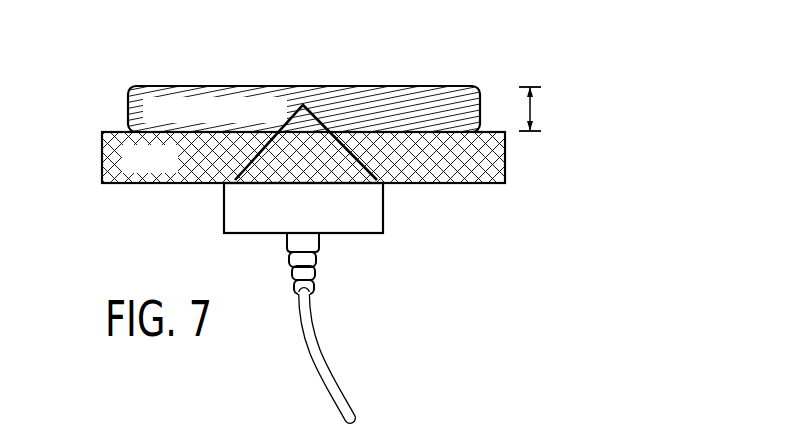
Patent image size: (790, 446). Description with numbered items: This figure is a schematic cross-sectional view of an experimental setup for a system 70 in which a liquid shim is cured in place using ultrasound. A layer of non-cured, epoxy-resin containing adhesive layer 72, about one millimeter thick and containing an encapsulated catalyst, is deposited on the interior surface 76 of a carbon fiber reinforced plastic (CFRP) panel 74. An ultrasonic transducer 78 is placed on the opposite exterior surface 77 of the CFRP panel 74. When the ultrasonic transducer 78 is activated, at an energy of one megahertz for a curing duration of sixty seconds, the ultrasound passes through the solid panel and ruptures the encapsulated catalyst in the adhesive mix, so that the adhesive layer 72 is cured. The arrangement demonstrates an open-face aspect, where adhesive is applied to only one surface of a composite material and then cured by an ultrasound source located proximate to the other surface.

The system 70 is at (240, 58).
The adhesive layer 72 is at (408, 108).
The carbon fiber reinforced plastic (CFRP) panel 74 is at (478, 156).
The interior surface 76 is at (128, 131).
The exterior surface 77 is at (408, 185).
The ultrasonic transducer 78 is at (352, 233).